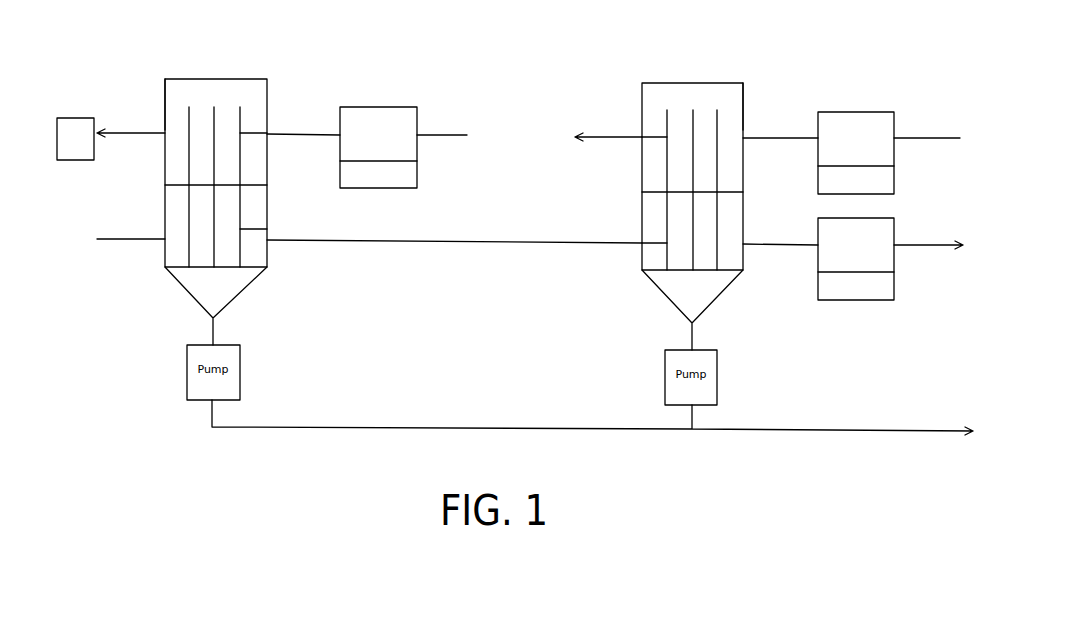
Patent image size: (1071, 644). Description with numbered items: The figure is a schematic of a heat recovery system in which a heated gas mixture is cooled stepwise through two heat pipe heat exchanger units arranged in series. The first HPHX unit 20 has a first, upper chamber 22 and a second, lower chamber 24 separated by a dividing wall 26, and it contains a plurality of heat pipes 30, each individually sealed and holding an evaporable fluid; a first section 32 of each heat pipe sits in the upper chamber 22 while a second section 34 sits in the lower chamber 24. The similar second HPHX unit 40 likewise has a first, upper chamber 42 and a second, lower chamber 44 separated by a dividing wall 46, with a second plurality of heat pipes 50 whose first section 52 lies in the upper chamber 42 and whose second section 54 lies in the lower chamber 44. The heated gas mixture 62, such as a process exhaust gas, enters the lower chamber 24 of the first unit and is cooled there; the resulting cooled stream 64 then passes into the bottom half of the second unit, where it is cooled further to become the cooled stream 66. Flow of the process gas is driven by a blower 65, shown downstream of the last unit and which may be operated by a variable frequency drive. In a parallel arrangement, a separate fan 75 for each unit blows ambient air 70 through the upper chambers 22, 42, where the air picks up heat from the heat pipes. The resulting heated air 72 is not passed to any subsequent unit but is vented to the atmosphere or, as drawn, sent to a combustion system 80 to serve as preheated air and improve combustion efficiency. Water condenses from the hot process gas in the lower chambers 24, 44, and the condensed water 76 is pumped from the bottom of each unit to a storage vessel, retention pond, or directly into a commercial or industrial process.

The first HPHX unit 20 is at (267, 93).
The first, upper chamber 22 is at (165, 99).
The second, lower chamber 24 is at (267, 268).
The dividing wall 26 is at (175, 185).
The heat pipes 30 is at (203, 260).
The first section 32 is at (242, 133).
The second section 34 is at (267, 227).
The second HPHX unit 40 is at (641, 97).
The first, upper chamber 42 is at (743, 95).
The second, lower chamber 44 is at (640, 268).
The dividing wall 46 is at (742, 195).
The second plurality of heat pipes 50 is at (703, 313).
The first section 52 is at (667, 157).
The second section 54 is at (642, 212).
The heated gas mixture 62 is at (127, 238).
The cooled stream 64 is at (472, 245).
The blower 65 is at (895, 233).
The cooled stream 66 is at (798, 245).
The ambient air 70 is at (433, 132).
The heated air 72 is at (130, 128).
The fan 75 is at (378, 100).
The condensed water 76 is at (880, 430).
The combustion system 80 is at (68, 160).